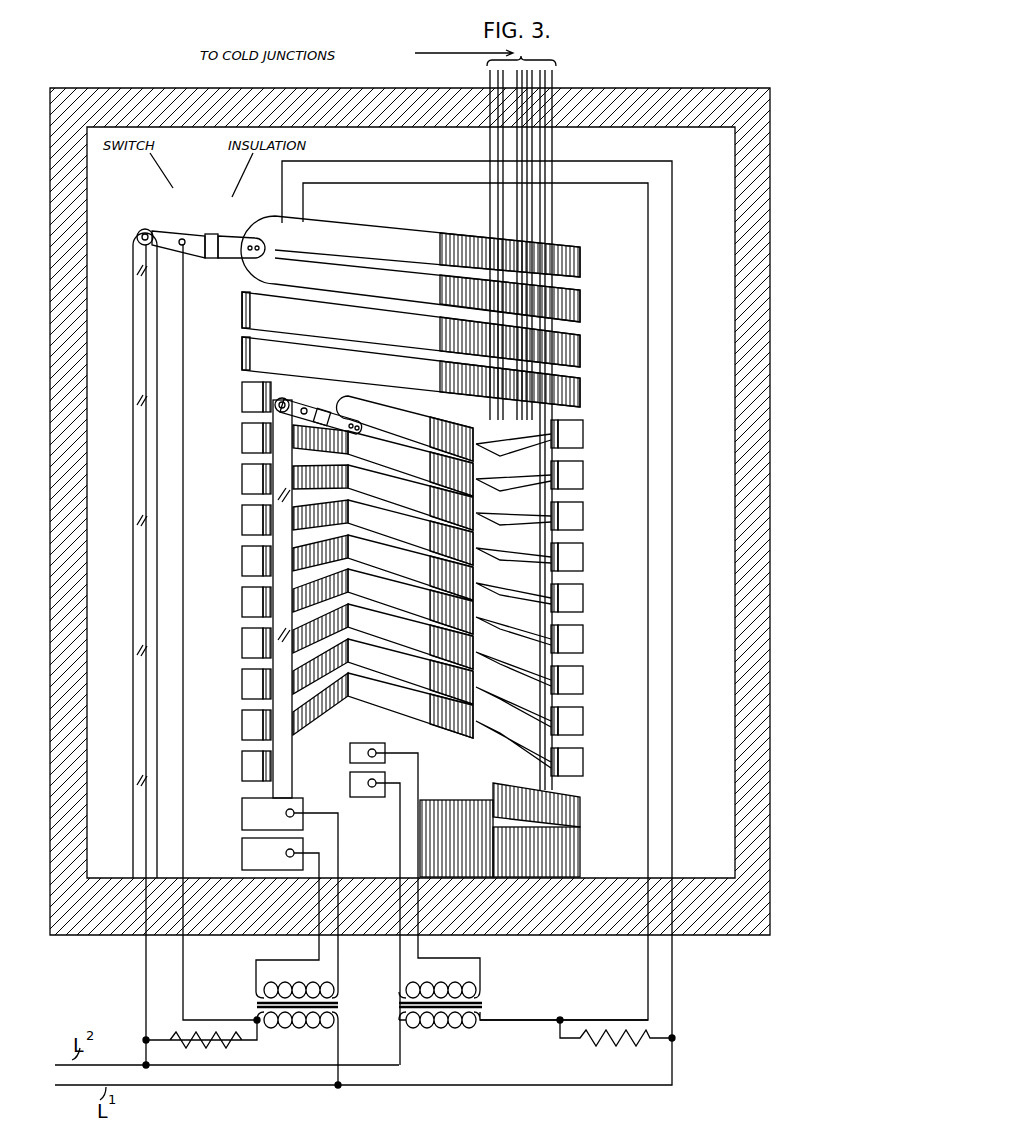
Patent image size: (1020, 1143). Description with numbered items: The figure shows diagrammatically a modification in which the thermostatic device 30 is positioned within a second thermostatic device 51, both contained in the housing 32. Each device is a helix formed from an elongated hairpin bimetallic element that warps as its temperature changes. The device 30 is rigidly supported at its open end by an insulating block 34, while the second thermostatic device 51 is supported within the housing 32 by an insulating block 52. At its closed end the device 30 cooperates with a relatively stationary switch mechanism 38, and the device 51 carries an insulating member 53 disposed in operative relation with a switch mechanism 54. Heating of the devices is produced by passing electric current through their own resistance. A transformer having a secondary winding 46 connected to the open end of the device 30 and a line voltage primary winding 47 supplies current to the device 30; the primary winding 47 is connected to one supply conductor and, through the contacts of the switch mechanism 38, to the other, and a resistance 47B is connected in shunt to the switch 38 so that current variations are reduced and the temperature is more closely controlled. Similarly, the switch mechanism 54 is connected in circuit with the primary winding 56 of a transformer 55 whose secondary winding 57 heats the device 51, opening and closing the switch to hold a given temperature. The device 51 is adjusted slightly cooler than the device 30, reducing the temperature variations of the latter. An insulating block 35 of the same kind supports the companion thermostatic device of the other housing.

The housing 32 is at (615, 97).
The switch mechanism 54 is at (183, 235).
The insulating member 53 is at (230, 240).
The second thermostatic device 51 is at (410, 240).
The switch mechanism 38 is at (300, 413).
The thermostatic device 30 is at (400, 432).
The insulating block 34 is at (575, 758).
The insulating block 52 is at (555, 856).
The secondary winding 57 is at (278, 986).
The transformer 55 is at (252, 1007).
The primary winding 56 is at (278, 1028).
The secondary winding 46 is at (428, 988).
The insulating block 35 is at (484, 1005).
The primary winding 47 is at (464, 1030).
The resistance 47B is at (616, 1046).